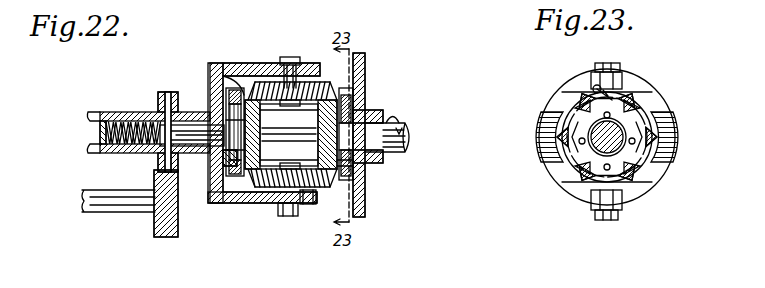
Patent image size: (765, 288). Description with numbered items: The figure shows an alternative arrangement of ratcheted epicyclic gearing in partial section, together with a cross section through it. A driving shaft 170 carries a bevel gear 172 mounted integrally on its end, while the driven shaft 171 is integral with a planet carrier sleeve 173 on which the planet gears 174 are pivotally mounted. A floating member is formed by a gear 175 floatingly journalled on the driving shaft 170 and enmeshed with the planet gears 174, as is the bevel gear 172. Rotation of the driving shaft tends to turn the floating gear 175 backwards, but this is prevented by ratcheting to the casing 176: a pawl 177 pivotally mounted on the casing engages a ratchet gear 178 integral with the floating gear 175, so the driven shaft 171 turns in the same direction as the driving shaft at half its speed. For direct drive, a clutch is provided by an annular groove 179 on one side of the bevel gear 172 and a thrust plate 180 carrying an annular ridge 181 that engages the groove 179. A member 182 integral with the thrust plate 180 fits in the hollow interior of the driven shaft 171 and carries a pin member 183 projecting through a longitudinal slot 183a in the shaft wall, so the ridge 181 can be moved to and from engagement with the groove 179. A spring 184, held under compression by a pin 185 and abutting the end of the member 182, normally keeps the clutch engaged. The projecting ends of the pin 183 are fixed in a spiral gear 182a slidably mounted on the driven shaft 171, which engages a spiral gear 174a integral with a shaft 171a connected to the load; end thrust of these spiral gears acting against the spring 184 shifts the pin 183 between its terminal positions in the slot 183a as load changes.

In FIG. 22, the driving shaft 170 is at (410, 137).
In FIG. 23, the driving shaft 170 is at (665, 152).
In FIG. 22, the driven shaft 171 is at (93, 114).
In FIG. 22, the shaft 171a is at (84, 200).
In FIG. 22, the bevel gear 172 is at (256, 187).
In FIG. 22, the planet carrier sleeve 173 is at (290, 197).
In FIG. 23, the planet carrier sleeve 173 is at (592, 74).
In FIG. 22, the planet gears 174 is at (297, 57).
In FIG. 23, the planet gears 174 is at (562, 99).
In FIG. 22, the spiral gear 174a is at (154, 225).
In FIG. 22, the floating member gear 175 is at (340, 163).
In FIG. 23, the floating member gear 175 is at (562, 141).
In FIG. 22, the casing 176 is at (365, 58).
In FIG. 22, the pawl 177 is at (354, 92).
In FIG. 23, the pawl 177 is at (612, 90).
In FIG. 22, the ratchet gear 178 is at (368, 115).
In FIG. 23, the ratchet gear 178 is at (640, 123).
In FIG. 22, the annular groove 179 is at (236, 90).
In FIG. 22, the thrust plate 180 is at (226, 168).
In FIG. 22, the annular ridge 181 is at (216, 63).
In FIG. 22, the member 182 is at (165, 148).
In FIG. 22, the spiral gear 182a is at (163, 96).
In FIG. 22, the pin member 183 is at (172, 92).
In FIG. 22, the longitudinal slot 183a is at (158, 112).
In FIG. 22, the spring 184 is at (108, 150).
In FIG. 22, the pin 185 is at (102, 134).